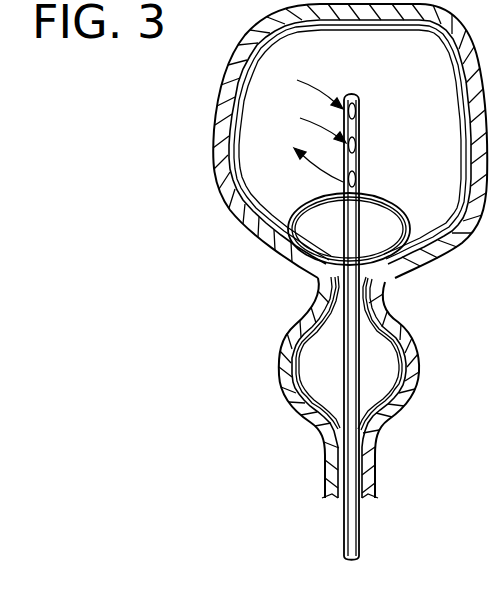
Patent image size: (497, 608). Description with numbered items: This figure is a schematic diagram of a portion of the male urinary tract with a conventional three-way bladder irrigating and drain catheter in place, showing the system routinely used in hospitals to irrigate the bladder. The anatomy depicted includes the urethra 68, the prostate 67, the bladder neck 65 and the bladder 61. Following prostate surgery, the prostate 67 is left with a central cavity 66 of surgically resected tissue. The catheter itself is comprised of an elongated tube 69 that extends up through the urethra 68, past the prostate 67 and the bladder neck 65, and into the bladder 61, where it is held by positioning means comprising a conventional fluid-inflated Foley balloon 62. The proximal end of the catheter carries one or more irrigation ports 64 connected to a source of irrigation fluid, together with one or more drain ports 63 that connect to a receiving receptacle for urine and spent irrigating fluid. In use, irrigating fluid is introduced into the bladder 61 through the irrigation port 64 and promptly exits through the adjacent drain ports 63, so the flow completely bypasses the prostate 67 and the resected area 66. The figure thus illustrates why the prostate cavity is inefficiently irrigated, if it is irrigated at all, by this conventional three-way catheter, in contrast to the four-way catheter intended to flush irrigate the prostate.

The bladder 61 is at (215, 133).
The Foley balloon 62 is at (315, 232).
The drain ports 63 is at (359, 111).
The irrigation port 64 is at (359, 180).
The bladder neck 65 is at (312, 290).
The central cavity 66 is at (310, 345).
The prostate 67 is at (280, 392).
The urethra 68 is at (322, 467).
The elongated tube 69 is at (348, 528).